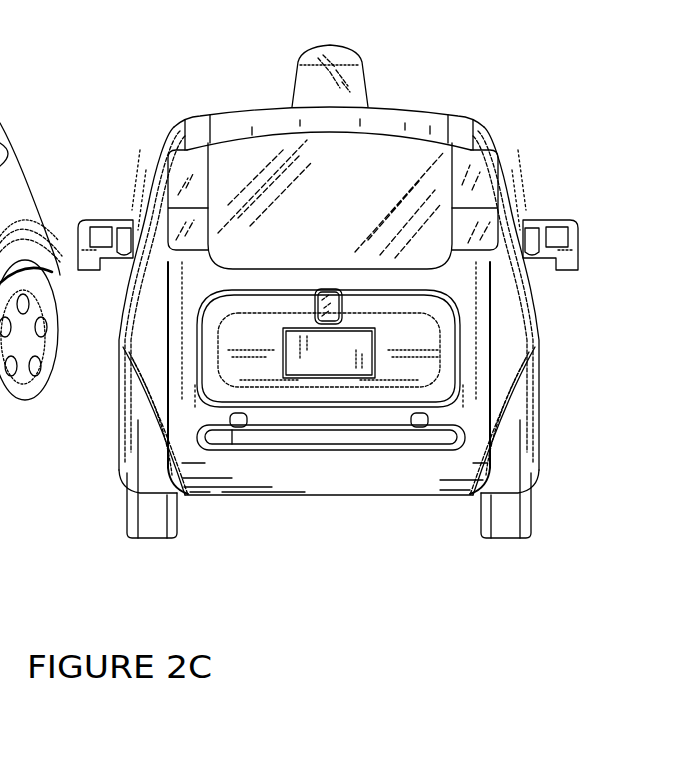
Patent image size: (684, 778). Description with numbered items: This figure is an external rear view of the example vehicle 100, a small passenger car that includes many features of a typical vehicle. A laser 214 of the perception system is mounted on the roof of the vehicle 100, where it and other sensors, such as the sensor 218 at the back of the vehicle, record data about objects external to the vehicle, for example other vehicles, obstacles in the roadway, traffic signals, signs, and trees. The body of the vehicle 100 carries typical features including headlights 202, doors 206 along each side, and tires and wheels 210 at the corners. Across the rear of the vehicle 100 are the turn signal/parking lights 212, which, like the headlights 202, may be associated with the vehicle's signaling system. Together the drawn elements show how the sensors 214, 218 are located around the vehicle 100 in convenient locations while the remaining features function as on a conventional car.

The vehicle 100 is at (138, 634).
The headlights 202 is at (480, 182).
The doors 206 is at (537, 293).
The tires and wheels 210 is at (530, 528).
The turn signal/parking lights 212 is at (440, 443).
The laser 214 is at (358, 75).
The sensor 218 is at (340, 330).